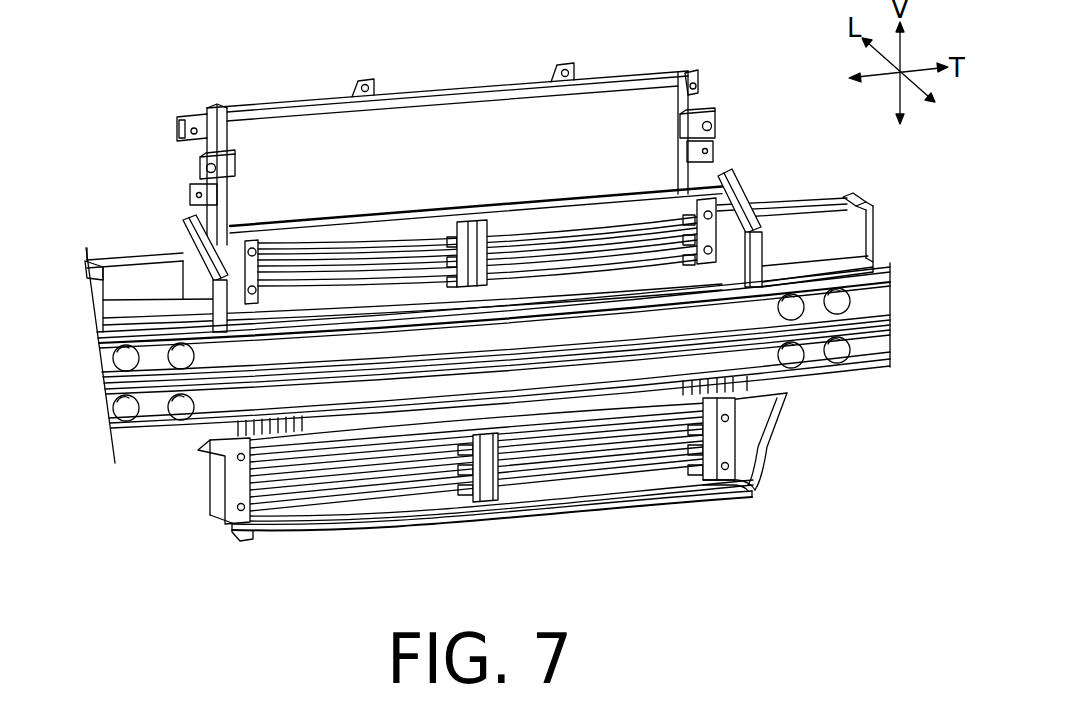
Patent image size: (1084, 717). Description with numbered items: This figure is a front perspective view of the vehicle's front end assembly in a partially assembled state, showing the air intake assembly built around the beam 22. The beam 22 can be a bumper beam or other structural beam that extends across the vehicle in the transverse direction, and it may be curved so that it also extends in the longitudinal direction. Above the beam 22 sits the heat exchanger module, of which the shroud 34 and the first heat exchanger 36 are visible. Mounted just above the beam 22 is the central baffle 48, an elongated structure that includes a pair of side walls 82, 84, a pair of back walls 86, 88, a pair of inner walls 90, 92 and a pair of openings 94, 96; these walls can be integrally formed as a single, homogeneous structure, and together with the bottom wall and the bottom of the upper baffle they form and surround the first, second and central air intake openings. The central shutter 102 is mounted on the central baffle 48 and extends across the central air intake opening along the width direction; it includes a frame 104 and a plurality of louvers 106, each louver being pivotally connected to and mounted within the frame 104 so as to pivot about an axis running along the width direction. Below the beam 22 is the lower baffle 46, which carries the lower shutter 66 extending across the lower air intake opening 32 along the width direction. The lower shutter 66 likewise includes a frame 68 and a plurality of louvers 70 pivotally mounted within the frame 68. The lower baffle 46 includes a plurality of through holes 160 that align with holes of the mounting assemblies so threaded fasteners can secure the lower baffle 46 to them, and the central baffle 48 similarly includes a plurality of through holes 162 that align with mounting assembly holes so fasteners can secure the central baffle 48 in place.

The beam 22 is at (882, 298).
The lower air intake opening 32 is at (660, 493).
The shroud 34 is at (446, 136).
The first heat exchanger 36 is at (283, 136).
The lower baffle 46 is at (492, 502).
The central baffle 48 is at (498, 372).
The lower shutter 66 is at (720, 440).
The frame 68 is at (486, 490).
The louvers 70 is at (397, 456).
The first side wall 82 is at (876, 252).
The second side wall 84 is at (94, 312).
The first back wall 86 is at (822, 252).
The second back wall 88 is at (120, 262).
The first inner wall 90 is at (724, 188).
The second inner wall 92 is at (185, 228).
The first opening 94 is at (852, 200).
The second opening 96 is at (130, 308).
The central shutter 102 is at (459, 234).
The frame 104 is at (483, 234).
The louvers 106 is at (320, 290).
The through holes 160 is at (237, 458).
The through holes 162 is at (256, 287).